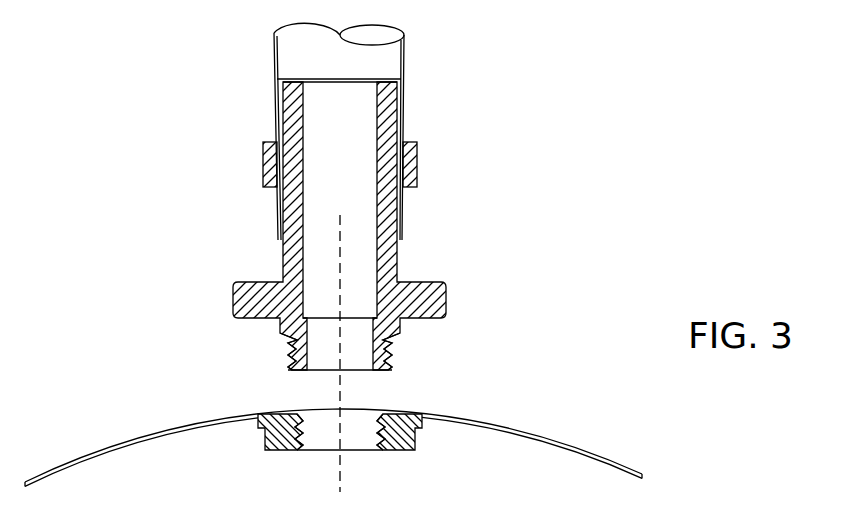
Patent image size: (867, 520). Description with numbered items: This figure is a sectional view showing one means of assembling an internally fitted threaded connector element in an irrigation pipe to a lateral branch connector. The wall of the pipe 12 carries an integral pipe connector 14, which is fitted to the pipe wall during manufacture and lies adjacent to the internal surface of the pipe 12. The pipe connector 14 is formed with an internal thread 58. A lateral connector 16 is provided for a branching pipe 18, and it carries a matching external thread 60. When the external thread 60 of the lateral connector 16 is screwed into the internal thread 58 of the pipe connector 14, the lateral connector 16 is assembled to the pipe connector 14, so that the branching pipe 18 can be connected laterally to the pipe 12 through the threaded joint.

The pipe 12 is at (577, 447).
The pipe connector 14 is at (416, 440).
The lateral connector 16 is at (447, 297).
The branching pipe 18 is at (405, 96).
The internal thread 58 is at (379, 428).
The external thread 60 is at (387, 356).